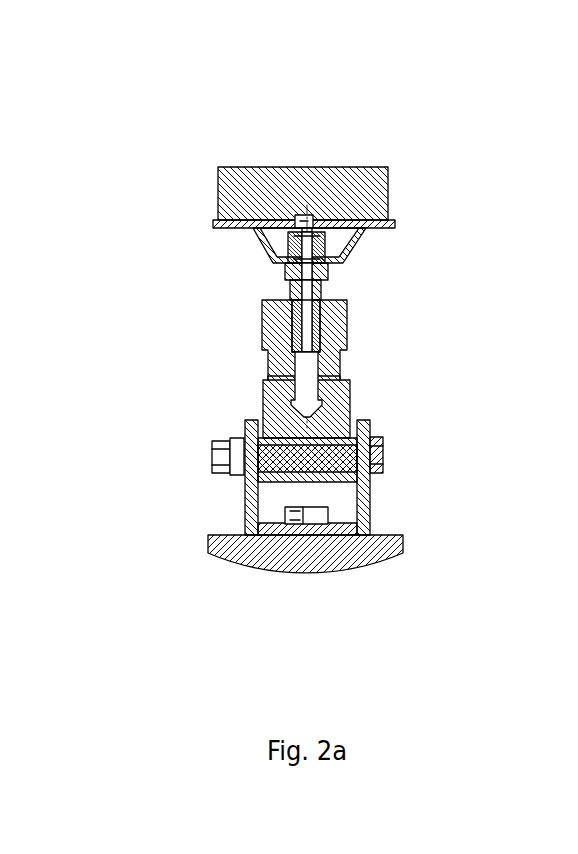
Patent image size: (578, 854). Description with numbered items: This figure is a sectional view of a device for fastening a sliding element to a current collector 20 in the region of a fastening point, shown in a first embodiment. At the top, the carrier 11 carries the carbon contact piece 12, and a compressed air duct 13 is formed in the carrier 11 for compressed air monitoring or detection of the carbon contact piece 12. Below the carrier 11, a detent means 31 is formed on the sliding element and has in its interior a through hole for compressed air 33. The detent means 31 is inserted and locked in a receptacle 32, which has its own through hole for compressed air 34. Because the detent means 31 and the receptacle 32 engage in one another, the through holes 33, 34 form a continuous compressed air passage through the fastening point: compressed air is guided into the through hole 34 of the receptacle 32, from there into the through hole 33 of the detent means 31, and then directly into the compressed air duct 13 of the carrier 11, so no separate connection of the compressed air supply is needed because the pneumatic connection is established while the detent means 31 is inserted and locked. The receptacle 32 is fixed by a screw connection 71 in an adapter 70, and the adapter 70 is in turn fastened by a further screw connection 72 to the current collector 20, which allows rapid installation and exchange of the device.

The carbon contact piece 12 is at (355, 190).
The compressed air duct 13 is at (300, 213).
The carrier 11 is at (348, 250).
The detent means 31 is at (312, 290).
The receptacle 32 is at (333, 330).
The through hole for compressed air 33 is at (262, 310).
The through hole for compressed air 34 is at (307, 375).
The screw connection 71 is at (383, 455).
The adapter 70 is at (363, 498).
The further screw connection 72 is at (287, 513).
The current collector 20 is at (378, 571).